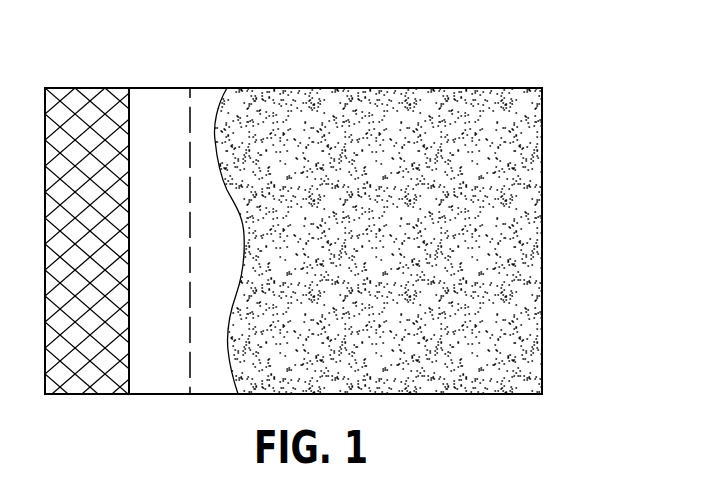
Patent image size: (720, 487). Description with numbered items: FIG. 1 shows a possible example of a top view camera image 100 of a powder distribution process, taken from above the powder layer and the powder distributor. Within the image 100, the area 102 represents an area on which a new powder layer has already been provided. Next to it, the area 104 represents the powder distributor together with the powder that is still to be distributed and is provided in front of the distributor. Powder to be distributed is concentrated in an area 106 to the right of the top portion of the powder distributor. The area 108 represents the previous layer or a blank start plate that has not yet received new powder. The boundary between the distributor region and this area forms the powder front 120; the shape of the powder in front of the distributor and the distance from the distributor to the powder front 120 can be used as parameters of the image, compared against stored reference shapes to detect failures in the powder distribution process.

The image 100 is at (587, 58).
The area on which new powder has been provided 102 is at (85, 117).
The area representing the powder distributor and powder to be distributed 104 is at (163, 117).
The area of concentrated powder 106 is at (213, 368).
The area representing the previous layer or blank start plate 108 is at (473, 345).
The powder front 120 is at (218, 137).